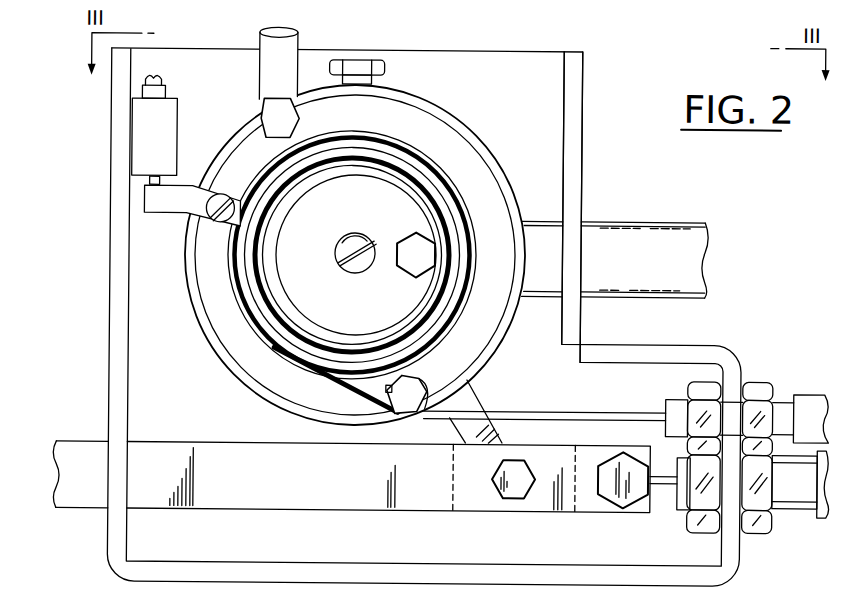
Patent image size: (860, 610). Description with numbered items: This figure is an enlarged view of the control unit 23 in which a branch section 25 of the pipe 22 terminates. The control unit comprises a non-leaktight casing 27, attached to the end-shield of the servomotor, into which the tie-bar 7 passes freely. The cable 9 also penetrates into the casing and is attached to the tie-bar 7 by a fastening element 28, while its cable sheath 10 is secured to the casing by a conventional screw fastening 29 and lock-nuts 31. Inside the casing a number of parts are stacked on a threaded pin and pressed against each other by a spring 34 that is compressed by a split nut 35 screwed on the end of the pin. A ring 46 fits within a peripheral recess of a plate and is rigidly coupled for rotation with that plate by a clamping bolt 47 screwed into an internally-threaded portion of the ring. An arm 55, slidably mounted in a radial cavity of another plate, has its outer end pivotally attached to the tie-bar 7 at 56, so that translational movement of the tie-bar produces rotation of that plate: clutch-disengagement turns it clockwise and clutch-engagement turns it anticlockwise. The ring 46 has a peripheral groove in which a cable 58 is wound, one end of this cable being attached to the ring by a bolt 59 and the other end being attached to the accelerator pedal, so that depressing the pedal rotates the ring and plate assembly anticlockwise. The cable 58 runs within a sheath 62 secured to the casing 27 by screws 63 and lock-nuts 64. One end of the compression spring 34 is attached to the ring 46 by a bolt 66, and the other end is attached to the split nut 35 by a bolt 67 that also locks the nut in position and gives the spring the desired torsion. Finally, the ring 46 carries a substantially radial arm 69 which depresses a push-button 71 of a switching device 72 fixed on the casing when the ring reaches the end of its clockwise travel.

The tie-bar 7 is at (290, 493).
The cable 9 is at (662, 478).
The cable sheath 10 is at (824, 518).
The pipe 22 is at (267, 43).
The control unit 23 is at (595, 129).
The branch section 25 is at (636, 240).
The casing 27 is at (121, 286).
The fastening element 28 is at (615, 490).
The screw fastening 29 is at (795, 497).
The lock-nuts 31 is at (706, 523).
The spring 34 is at (397, 157).
The split nut 35 is at (332, 252).
The ring 46 is at (201, 329).
The clamping bolt 47 is at (356, 68).
The arm 55 is at (476, 391).
The pivotal attachment 56 is at (500, 498).
The cable 58 is at (588, 411).
The bolt 59 is at (275, 116).
The sheath 62 is at (805, 410).
The screws 63 is at (783, 408).
The lock-nuts 64 is at (700, 383).
The bolt 66 is at (404, 398).
The bolt 67 is at (410, 262).
The radial arm 69 is at (164, 213).
The push-button 71 is at (149, 182).
The switching device 72 is at (143, 130).